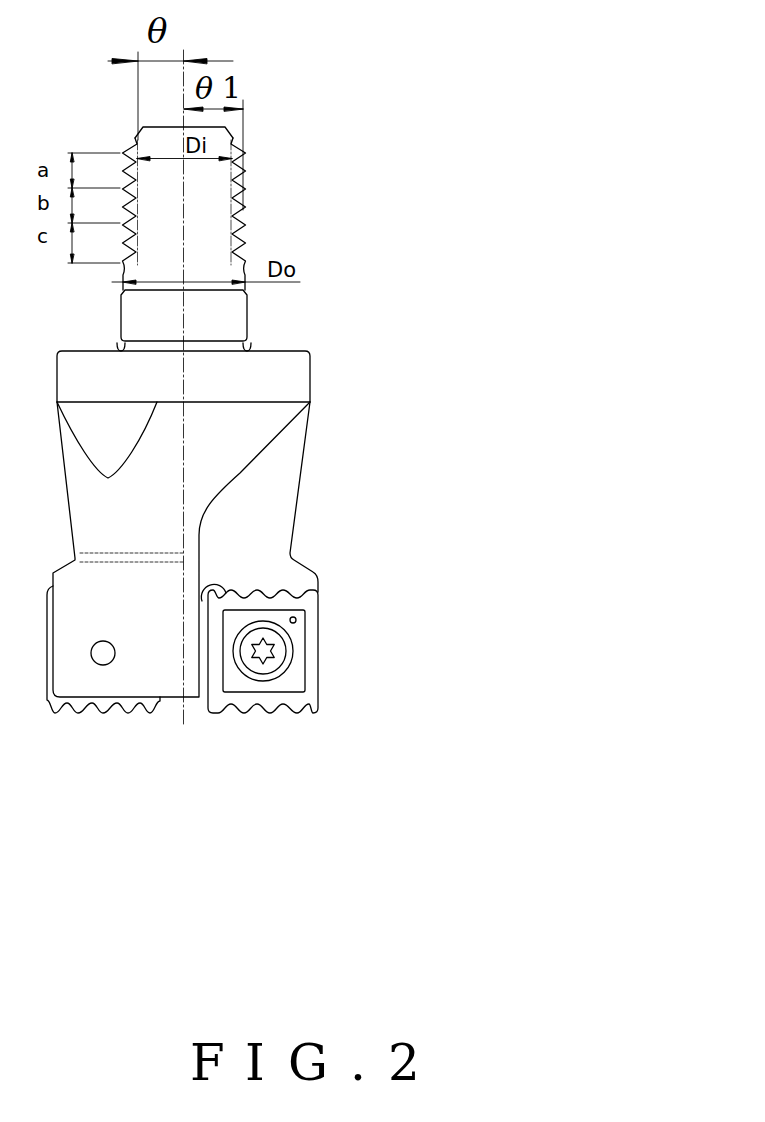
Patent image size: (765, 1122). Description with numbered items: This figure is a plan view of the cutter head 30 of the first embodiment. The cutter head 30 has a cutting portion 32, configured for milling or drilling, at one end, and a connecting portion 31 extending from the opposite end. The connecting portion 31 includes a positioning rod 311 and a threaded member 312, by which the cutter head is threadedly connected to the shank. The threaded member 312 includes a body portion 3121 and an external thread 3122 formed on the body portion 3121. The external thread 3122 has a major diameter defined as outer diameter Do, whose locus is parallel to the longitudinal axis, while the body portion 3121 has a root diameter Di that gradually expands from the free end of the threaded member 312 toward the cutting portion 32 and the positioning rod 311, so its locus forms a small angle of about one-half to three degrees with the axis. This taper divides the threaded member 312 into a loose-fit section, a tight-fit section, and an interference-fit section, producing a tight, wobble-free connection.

The cutter head 30 is at (272, 460).
The connecting portion 31 is at (320, 198).
The positioning rod 311 is at (225, 322).
The threaded member 312 is at (304, 167).
The body portion 3121 is at (218, 145).
The external thread 3122 is at (245, 153).
The cutting portion 32 is at (312, 657).